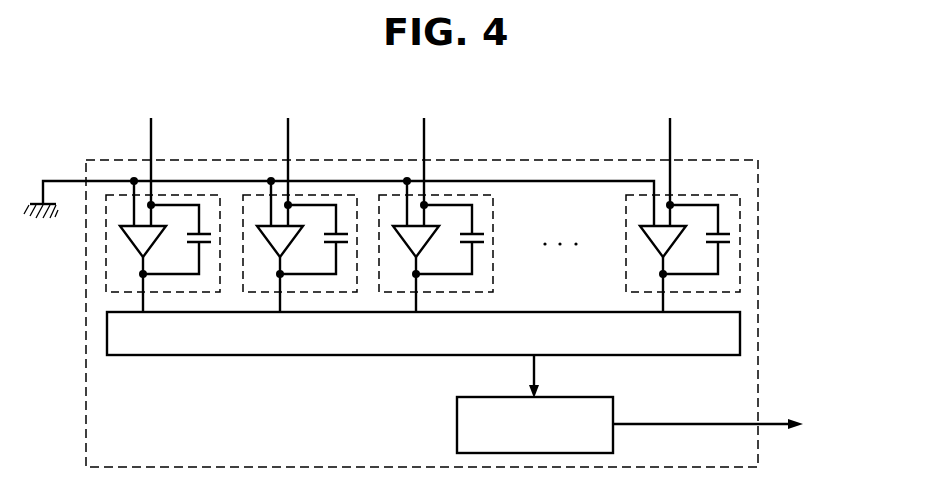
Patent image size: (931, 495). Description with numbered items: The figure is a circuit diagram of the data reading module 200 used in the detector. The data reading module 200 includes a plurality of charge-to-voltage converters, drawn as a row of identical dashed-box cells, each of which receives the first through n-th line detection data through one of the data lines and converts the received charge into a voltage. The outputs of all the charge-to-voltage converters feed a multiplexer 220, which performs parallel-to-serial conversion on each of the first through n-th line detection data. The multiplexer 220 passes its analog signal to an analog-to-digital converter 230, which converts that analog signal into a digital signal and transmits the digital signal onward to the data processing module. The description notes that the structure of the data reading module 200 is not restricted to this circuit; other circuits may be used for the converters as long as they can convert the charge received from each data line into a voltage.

The data reading module 200 is at (786, 135).
The multiplexer 220 is at (740, 327).
The analog-to-digital converter 230 is at (457, 422).